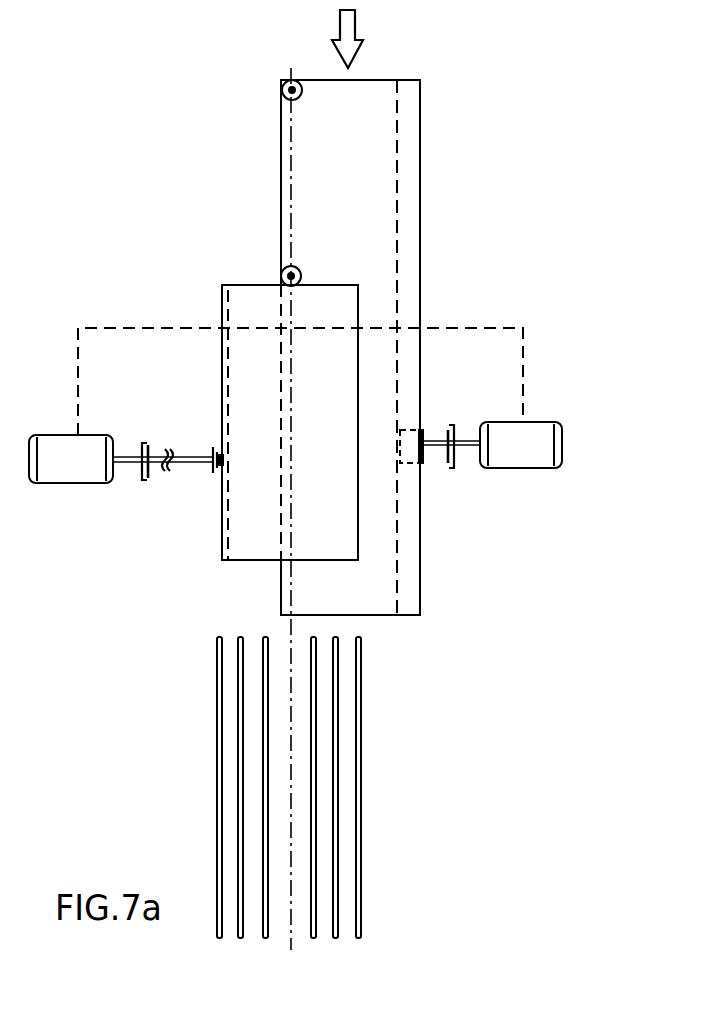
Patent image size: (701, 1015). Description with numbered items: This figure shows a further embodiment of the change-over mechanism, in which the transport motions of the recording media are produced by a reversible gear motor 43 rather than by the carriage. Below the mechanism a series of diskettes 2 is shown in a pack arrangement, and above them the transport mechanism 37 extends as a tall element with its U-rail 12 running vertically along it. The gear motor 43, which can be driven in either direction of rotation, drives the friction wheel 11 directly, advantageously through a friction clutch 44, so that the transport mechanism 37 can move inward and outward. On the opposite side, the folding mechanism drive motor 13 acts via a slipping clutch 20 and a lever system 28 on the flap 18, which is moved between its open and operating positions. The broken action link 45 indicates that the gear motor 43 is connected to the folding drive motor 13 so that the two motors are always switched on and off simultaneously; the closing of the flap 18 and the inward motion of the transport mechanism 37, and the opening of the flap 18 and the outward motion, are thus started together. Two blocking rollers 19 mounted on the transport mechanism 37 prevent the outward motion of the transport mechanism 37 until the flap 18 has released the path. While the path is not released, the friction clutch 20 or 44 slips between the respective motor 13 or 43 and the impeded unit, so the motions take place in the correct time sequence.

The diskettes 2 is at (335, 768).
The friction wheel 11 is at (413, 432).
The U-rail 12 is at (407, 121).
The folding mechanism drive motor 13 is at (55, 468).
The flap 18 is at (242, 365).
The blocking rollers 19 is at (282, 93).
The slipping clutch 20 is at (138, 480).
The lever system 28 is at (171, 478).
The transport mechanism 37 is at (427, 203).
The gear motor 43 is at (536, 455).
The friction clutch 44 is at (450, 473).
The action link 45 is at (478, 326).